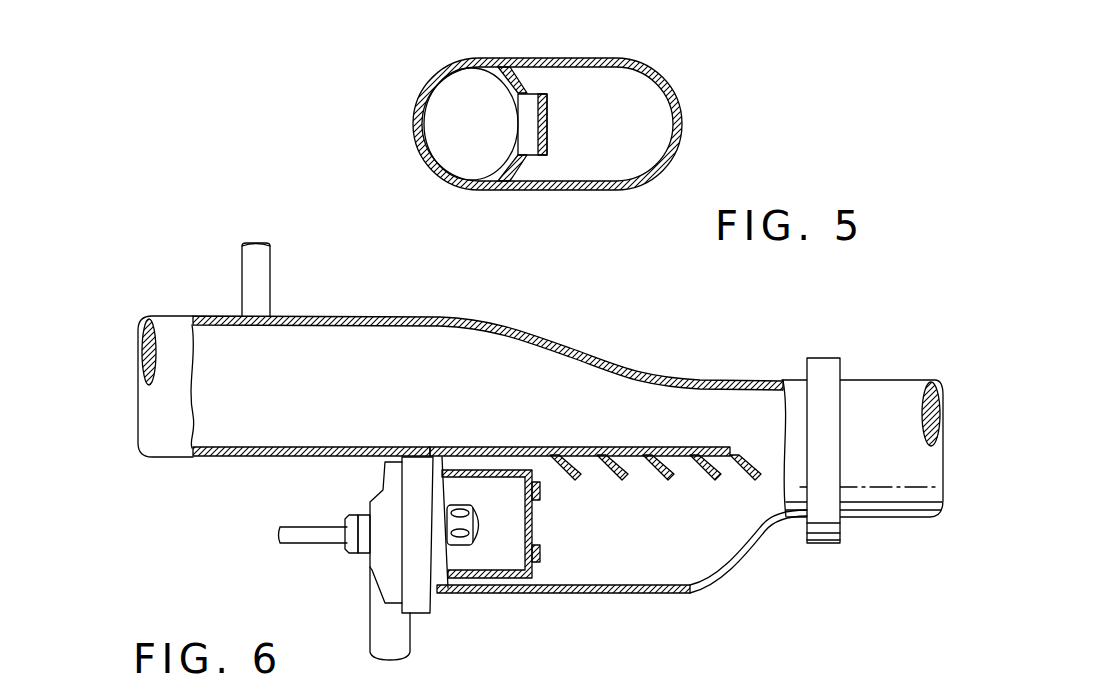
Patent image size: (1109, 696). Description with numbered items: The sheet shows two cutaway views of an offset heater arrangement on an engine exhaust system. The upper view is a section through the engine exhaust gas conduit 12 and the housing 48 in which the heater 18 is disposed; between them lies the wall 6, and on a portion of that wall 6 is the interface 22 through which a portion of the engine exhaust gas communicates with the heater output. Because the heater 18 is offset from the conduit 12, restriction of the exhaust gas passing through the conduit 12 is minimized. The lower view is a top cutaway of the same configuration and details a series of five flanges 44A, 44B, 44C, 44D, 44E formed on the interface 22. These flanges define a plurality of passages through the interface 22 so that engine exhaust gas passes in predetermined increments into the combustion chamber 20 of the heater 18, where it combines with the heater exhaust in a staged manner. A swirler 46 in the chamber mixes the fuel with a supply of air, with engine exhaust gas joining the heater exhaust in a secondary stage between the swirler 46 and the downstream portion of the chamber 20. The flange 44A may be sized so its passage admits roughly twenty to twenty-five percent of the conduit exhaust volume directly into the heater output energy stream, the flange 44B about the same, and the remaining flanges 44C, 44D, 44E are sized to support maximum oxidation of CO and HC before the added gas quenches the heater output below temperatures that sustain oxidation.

In FIG. 5, the wall 6 is at (508, 76).
In FIG. 5, the engine exhaust gas conduit 12 is at (447, 120).
In FIG. 6, the engine exhaust gas conduit 12 is at (348, 352).
In FIG. 6, the heater 18 is at (420, 602).
In FIG. 6, the combustion chamber 20 is at (668, 570).
In FIG. 5, the interface 22 is at (548, 112).
In FIG. 6, the interface 22 is at (508, 447).
In FIG. 6, the flange 44A is at (567, 474).
In FIG. 6, the flange 44B is at (610, 474).
In FIG. 6, the flange 44C is at (655, 474).
In FIG. 6, the flange 44D is at (698, 474).
In FIG. 6, the flange 44E is at (745, 474).
In FIG. 6, the swirler 46 is at (525, 530).
In FIG. 5, the housing 48 is at (583, 58).